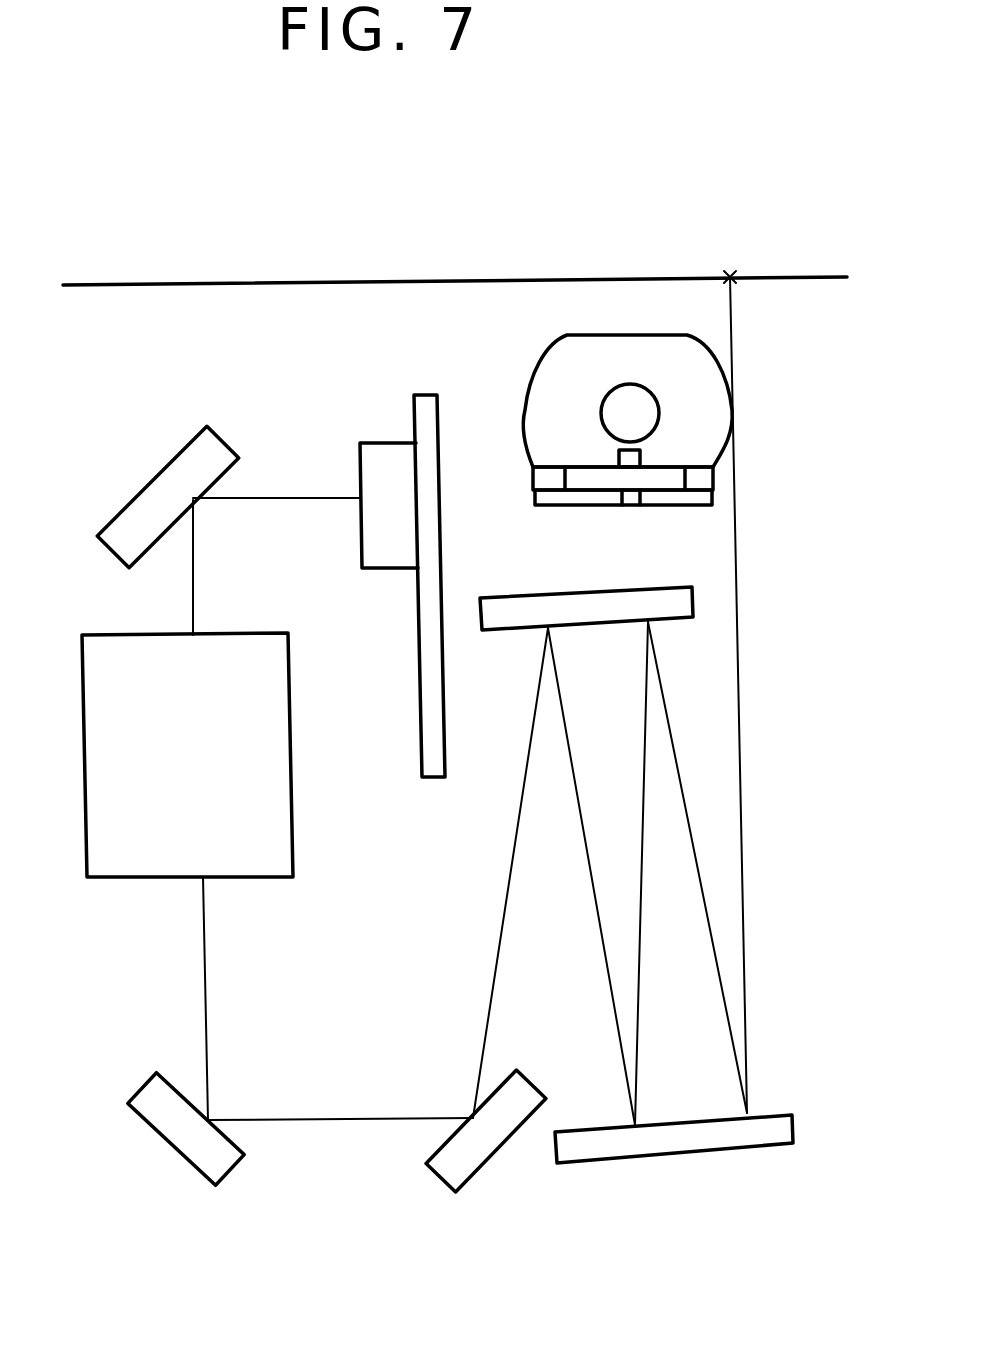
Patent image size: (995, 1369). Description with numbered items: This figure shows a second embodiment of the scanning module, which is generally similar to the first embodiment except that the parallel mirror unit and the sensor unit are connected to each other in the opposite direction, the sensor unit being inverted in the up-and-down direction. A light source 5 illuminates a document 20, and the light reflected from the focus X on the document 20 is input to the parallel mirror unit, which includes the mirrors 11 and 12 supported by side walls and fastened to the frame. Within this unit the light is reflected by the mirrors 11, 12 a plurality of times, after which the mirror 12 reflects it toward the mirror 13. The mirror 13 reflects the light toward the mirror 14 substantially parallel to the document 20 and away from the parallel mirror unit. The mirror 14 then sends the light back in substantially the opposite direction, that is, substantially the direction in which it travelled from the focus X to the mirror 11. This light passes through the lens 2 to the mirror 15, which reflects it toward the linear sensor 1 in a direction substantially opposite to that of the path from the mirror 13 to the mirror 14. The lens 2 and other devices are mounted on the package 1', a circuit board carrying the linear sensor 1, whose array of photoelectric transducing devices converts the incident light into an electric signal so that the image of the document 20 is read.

The document 20 is at (340, 280).
The focus X is at (730, 275).
The light source 5 is at (721, 405).
The mirror 15 is at (212, 447).
The linear sensor 1 is at (365, 535).
The package 1' is at (424, 644).
The lens 2 is at (97, 793).
The mirror 12 is at (575, 603).
The mirror 11 is at (685, 1140).
The mirror 14 is at (162, 1135).
The mirror 13 is at (453, 1170).